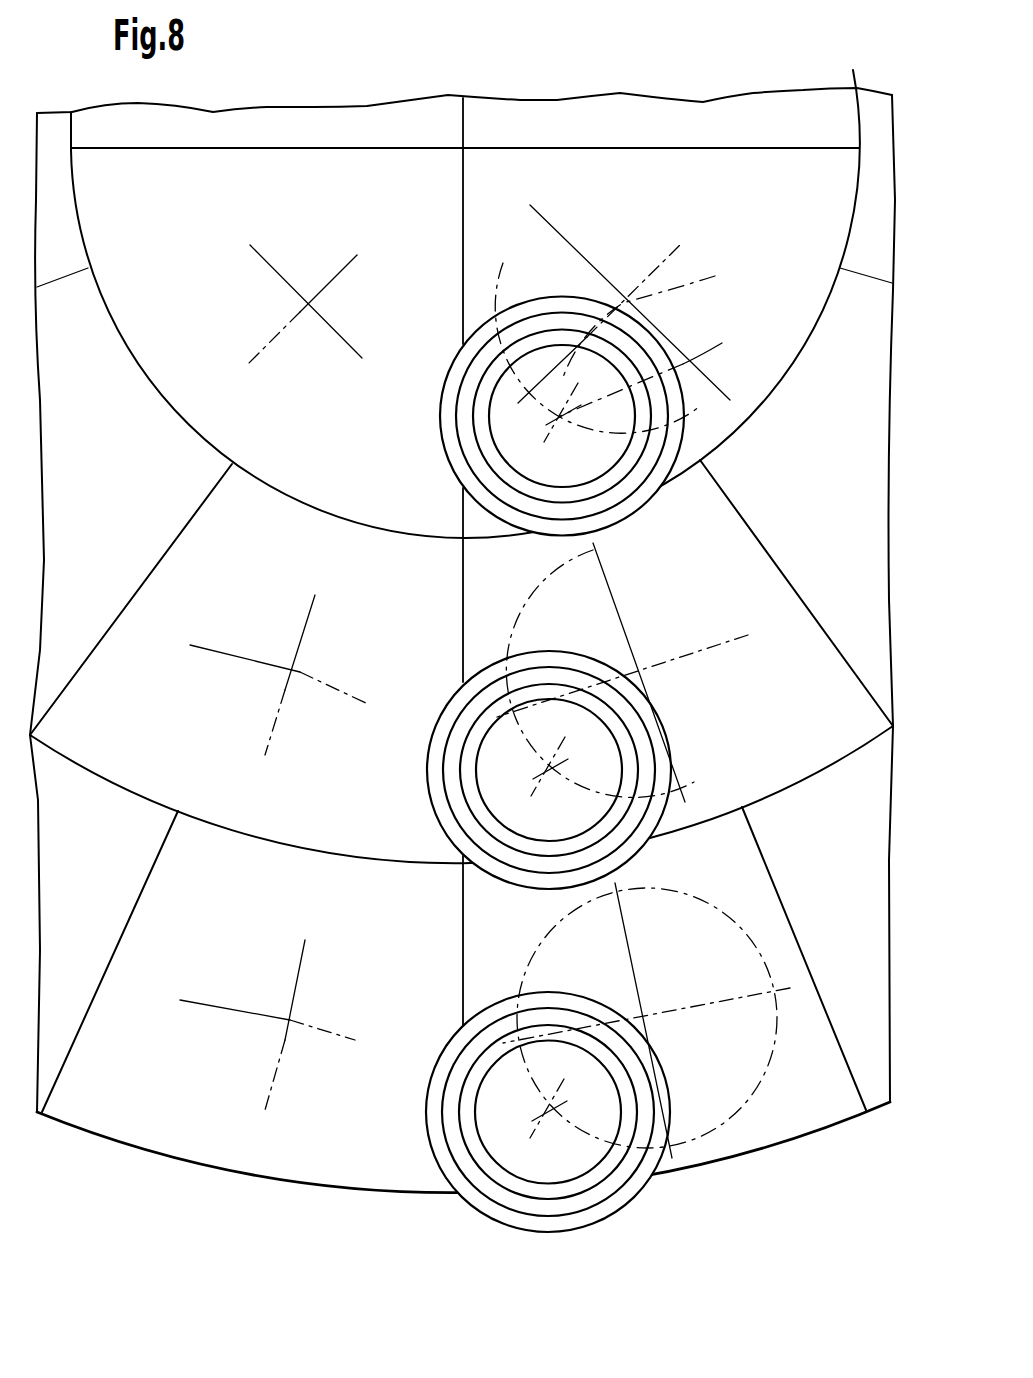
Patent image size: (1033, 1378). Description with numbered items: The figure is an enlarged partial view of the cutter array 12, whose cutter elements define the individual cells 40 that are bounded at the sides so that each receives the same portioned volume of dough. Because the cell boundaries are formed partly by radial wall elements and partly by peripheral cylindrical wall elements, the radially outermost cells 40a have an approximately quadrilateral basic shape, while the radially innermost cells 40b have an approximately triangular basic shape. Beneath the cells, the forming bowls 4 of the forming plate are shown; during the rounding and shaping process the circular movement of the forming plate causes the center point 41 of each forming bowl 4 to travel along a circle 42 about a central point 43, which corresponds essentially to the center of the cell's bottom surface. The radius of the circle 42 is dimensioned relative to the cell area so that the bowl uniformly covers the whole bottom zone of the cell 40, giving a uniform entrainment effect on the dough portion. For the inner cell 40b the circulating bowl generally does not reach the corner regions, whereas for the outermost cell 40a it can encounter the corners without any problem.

The cutter array 12 is at (363, 139).
The cell 40 is at (705, 196).
The radially outermost cell 40a is at (129, 733).
The radially innermost cell 40b is at (309, 435).
The forming bowl 4 is at (687, 450).
The center point 41 is at (652, 370).
The circle 42 is at (710, 405).
The central point 43 is at (653, 319).